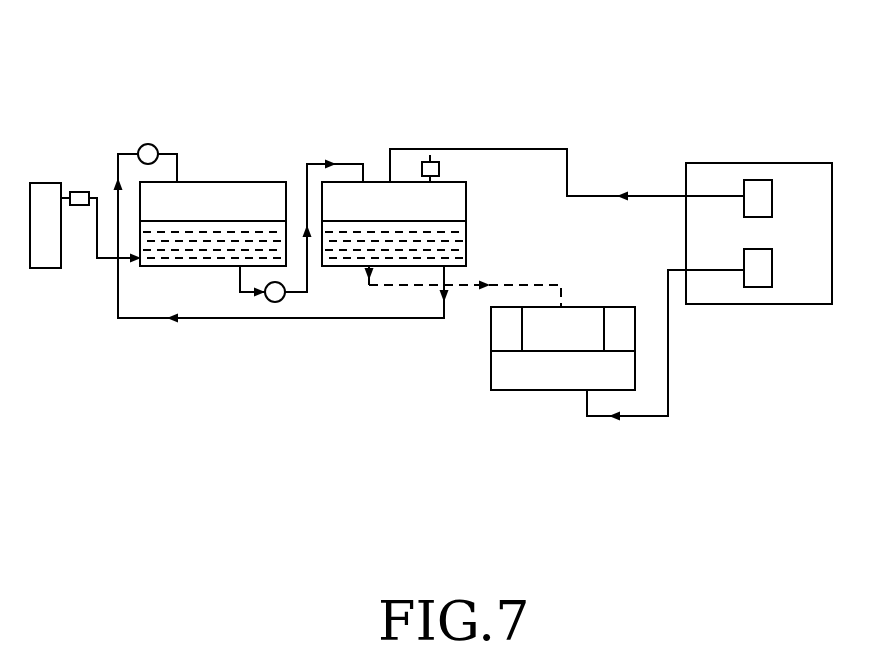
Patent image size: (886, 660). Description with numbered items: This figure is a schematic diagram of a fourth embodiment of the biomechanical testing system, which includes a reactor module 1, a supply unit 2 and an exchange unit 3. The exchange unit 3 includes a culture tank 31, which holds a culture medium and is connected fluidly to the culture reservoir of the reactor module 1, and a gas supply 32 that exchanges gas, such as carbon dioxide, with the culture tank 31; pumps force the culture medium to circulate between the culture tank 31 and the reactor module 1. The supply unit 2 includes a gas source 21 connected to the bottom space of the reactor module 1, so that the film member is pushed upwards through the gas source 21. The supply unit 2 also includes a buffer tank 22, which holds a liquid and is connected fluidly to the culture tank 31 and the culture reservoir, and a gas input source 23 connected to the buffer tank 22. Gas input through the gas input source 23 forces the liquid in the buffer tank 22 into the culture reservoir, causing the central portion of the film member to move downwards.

The reactor module 1 is at (467, 412).
The supply unit 2 is at (709, 122).
The gas source 21 is at (757, 287).
The buffer tank 22 is at (466, 233).
The gas input source 23 is at (758, 180).
The exchange unit 3 is at (284, 126).
The culture tank 31 is at (225, 182).
The gas supply 32 is at (43, 268).